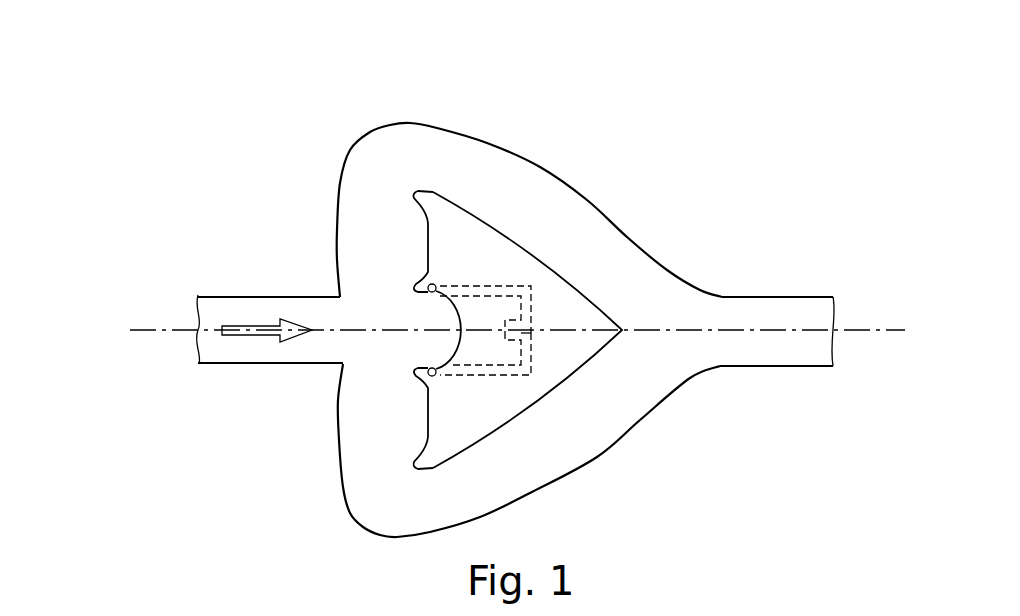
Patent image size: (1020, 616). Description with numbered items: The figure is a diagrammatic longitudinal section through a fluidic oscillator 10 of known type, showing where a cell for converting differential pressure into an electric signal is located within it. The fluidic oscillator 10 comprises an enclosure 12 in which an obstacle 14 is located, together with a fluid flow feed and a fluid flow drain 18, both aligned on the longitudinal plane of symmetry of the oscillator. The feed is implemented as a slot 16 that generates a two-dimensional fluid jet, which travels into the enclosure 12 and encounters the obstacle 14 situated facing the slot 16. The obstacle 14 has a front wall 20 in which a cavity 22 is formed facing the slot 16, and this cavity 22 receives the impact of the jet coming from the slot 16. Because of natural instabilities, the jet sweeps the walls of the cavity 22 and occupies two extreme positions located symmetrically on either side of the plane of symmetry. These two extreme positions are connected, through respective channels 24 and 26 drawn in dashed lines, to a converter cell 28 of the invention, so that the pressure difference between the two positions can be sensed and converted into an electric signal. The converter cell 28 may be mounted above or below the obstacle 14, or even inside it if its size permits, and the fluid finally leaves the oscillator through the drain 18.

The fluidic oscillator 10 is at (533, 273).
The enclosure 12 is at (540, 167).
The obstacle 14 is at (573, 287).
The slot 16 is at (253, 295).
The fluid flow drain 18 is at (777, 296).
The front wall 20 is at (427, 263).
The cavity 22 is at (433, 348).
The channel 24 is at (497, 286).
The channel 26 is at (492, 378).
The converter cell 28 is at (527, 333).